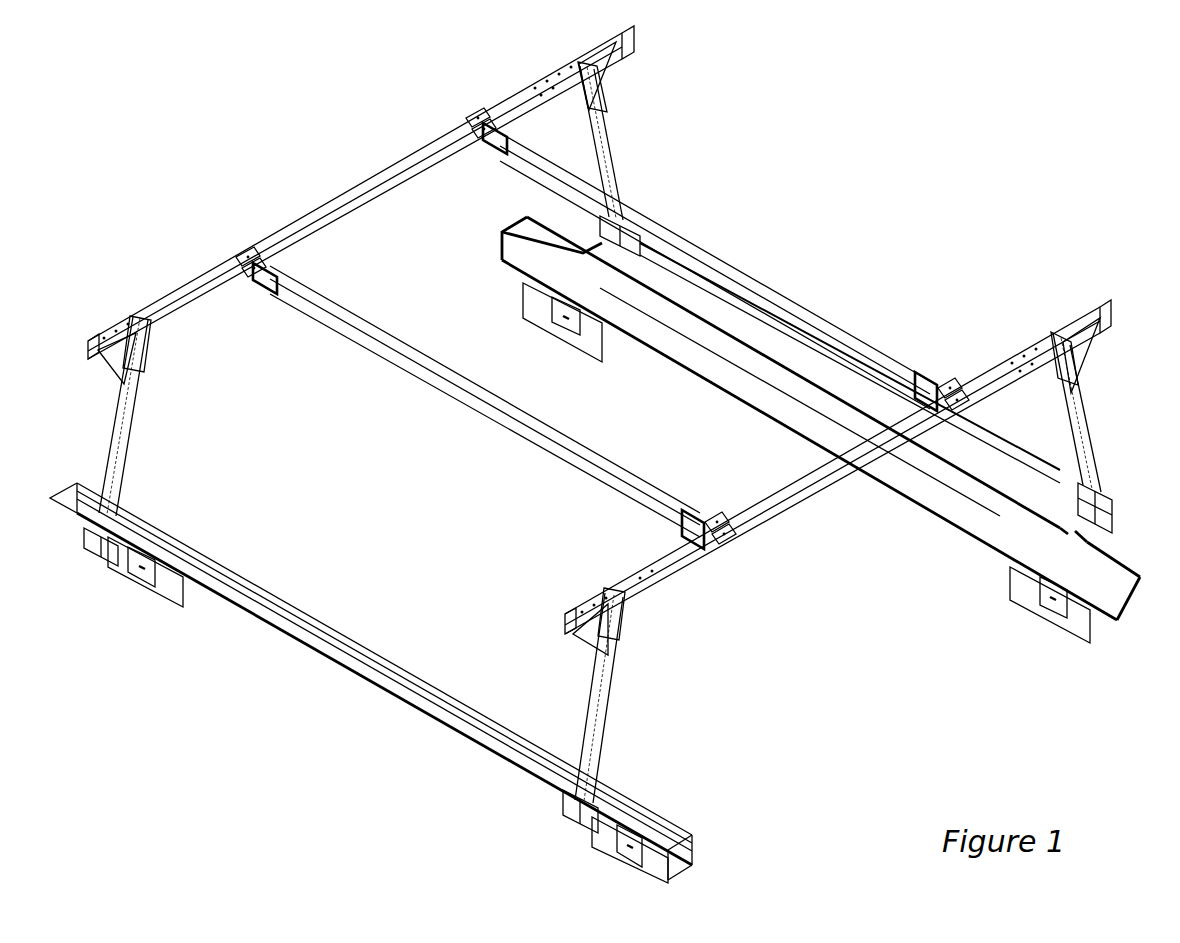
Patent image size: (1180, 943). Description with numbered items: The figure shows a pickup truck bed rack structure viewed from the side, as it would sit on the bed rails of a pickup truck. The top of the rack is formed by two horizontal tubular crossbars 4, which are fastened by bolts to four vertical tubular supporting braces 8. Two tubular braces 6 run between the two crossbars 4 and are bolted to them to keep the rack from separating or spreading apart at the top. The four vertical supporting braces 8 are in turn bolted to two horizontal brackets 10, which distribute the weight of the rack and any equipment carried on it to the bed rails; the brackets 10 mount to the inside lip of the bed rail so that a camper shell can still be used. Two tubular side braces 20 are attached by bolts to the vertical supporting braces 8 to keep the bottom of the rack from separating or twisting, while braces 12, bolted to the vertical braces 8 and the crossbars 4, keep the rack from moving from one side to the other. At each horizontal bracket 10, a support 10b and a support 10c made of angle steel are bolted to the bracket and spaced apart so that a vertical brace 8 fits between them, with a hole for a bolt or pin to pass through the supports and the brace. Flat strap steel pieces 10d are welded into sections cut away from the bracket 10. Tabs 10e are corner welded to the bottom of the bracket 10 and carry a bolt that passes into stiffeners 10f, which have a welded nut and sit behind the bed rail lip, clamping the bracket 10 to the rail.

The horizontal tubular crossbar 4 is at (301, 126).
The tubular brace 6 is at (450, 183).
The vertical tubular supporting brace 8 is at (645, 144).
The horizontal bracket 10 is at (863, 528).
The support 10b is at (1137, 493).
The support 10c is at (1142, 557).
The flat strap steel piece 10d is at (493, 198).
The tab 10e is at (967, 623).
The stiffener 10f is at (1015, 662).
The brace 12 is at (639, 93).
The tubular side brace 20 is at (1025, 398).